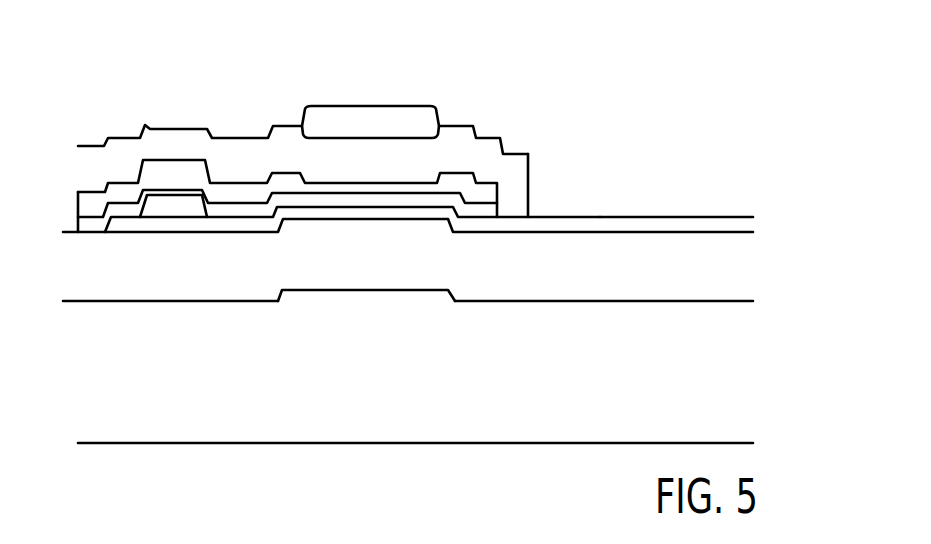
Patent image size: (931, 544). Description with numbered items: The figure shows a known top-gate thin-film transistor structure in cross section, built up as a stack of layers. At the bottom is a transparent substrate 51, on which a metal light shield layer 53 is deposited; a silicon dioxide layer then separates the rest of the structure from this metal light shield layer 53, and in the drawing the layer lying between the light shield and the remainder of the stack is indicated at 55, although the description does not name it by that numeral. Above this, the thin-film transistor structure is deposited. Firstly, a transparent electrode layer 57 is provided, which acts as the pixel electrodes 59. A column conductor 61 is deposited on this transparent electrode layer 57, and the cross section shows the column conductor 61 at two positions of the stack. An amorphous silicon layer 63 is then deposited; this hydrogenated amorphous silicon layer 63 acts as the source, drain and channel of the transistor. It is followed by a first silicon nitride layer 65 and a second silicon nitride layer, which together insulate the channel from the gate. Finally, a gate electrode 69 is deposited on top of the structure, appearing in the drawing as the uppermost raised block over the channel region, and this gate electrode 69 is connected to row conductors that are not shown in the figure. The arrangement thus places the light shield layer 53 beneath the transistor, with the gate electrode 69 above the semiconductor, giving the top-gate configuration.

The transparent substrate 51 is at (735, 367).
The metal light shield layer 53 is at (357, 295).
The gate insulating layer 55 is at (735, 263).
The transparent electrode layer 57 is at (717, 225).
The pixel electrodes 59 is at (663, 216).
The column conductor 61 is at (173, 198).
The amorphous silicon layer 63 is at (493, 209).
The first silicon nitride layer 65 is at (493, 188).
The gate electrode 69 is at (342, 105).